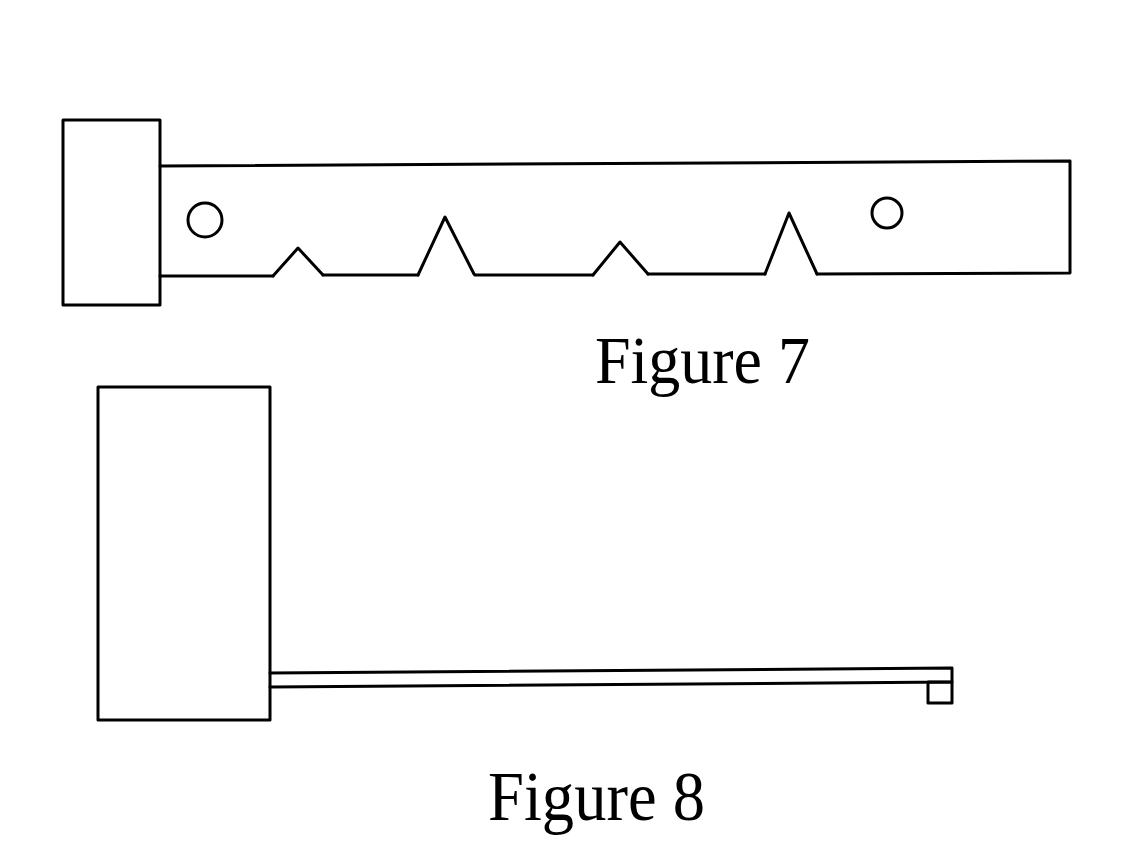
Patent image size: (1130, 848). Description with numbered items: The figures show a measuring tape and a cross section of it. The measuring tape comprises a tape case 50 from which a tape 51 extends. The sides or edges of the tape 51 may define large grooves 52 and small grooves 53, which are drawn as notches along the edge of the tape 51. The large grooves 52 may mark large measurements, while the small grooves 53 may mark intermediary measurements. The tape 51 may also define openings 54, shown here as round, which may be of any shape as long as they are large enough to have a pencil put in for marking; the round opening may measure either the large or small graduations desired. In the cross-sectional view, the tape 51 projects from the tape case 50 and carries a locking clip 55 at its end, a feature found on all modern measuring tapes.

In FIG. 7, the tape case 50 is at (148, 233).
In FIG. 8, the tape case 50 is at (228, 541).
In FIG. 8, the tape 51 is at (440, 673).
In FIG. 7, the large grooves 52 is at (441, 262).
In FIG. 7, the small grooves 53 is at (296, 269).
In FIG. 7, the openings 54 is at (200, 221).
In FIG. 8, the locking clip 55 is at (937, 690).